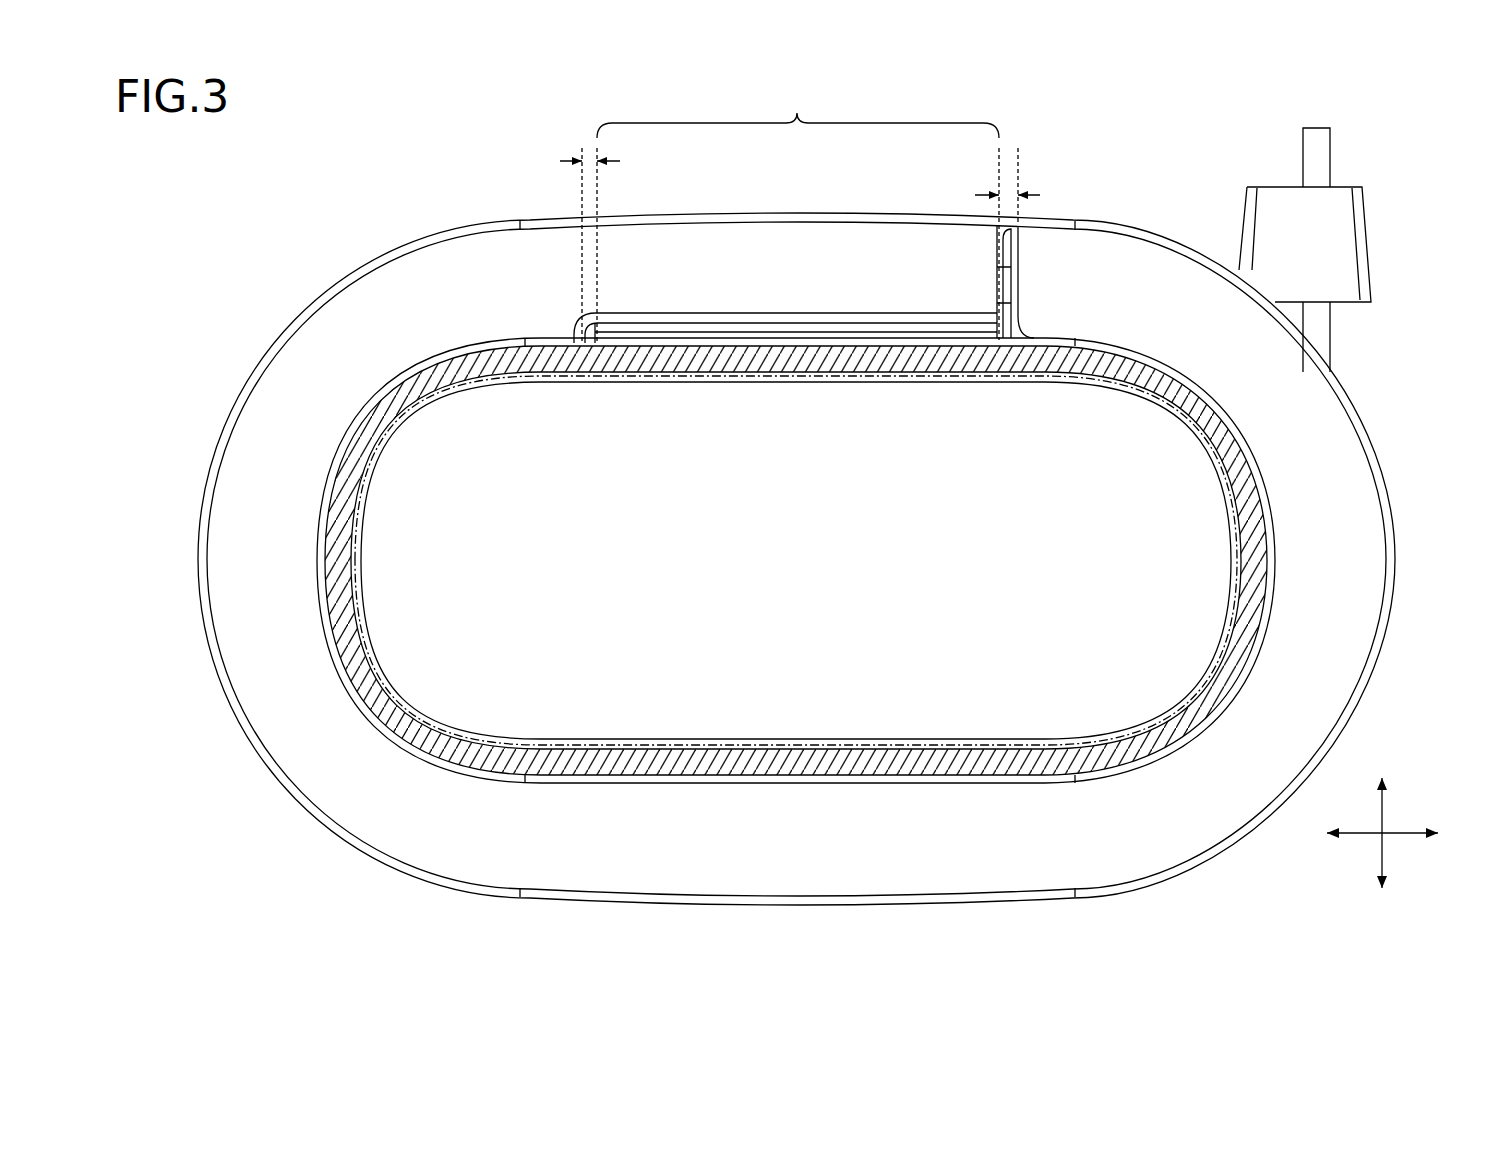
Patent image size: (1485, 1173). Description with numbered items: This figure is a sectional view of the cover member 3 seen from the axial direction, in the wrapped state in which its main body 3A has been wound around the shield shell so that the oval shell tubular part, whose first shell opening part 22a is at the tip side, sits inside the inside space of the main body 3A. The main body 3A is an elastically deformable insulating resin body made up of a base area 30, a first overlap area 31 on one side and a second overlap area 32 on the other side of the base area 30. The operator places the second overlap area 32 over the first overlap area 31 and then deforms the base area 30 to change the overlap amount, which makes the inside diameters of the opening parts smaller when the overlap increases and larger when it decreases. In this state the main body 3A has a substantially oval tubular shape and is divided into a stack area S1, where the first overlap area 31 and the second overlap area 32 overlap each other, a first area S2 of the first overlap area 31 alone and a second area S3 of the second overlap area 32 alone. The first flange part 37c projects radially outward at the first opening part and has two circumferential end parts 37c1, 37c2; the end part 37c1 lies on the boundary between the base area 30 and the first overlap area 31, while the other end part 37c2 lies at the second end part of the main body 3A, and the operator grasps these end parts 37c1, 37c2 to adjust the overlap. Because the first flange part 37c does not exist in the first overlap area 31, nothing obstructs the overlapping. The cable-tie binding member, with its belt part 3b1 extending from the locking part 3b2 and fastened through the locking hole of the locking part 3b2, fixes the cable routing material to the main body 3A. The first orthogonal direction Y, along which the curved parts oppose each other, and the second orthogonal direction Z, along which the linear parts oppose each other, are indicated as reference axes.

The cover member 3 is at (1344, 250).
The main body 3A is at (238, 311).
The belt part 3b1 is at (1330, 156).
The locking part 3b2 is at (1372, 243).
The base area 30 is at (317, 573).
The first overlap area 31 is at (965, 332).
The second overlap area 32 is at (668, 312).
The first flange part 37c is at (1117, 226).
The end part of first flange part 37c1 is at (1018, 308).
The end part of first flange part 37c2 is at (1020, 268).
The first shell opening part 22a is at (808, 784).
The stack area S1 is at (790, 215).
The first area S2 is at (586, 170).
The second area S3 is at (1010, 190).
The first orthogonal direction Y is at (1405, 836).
The second orthogonal direction Z is at (1382, 800).